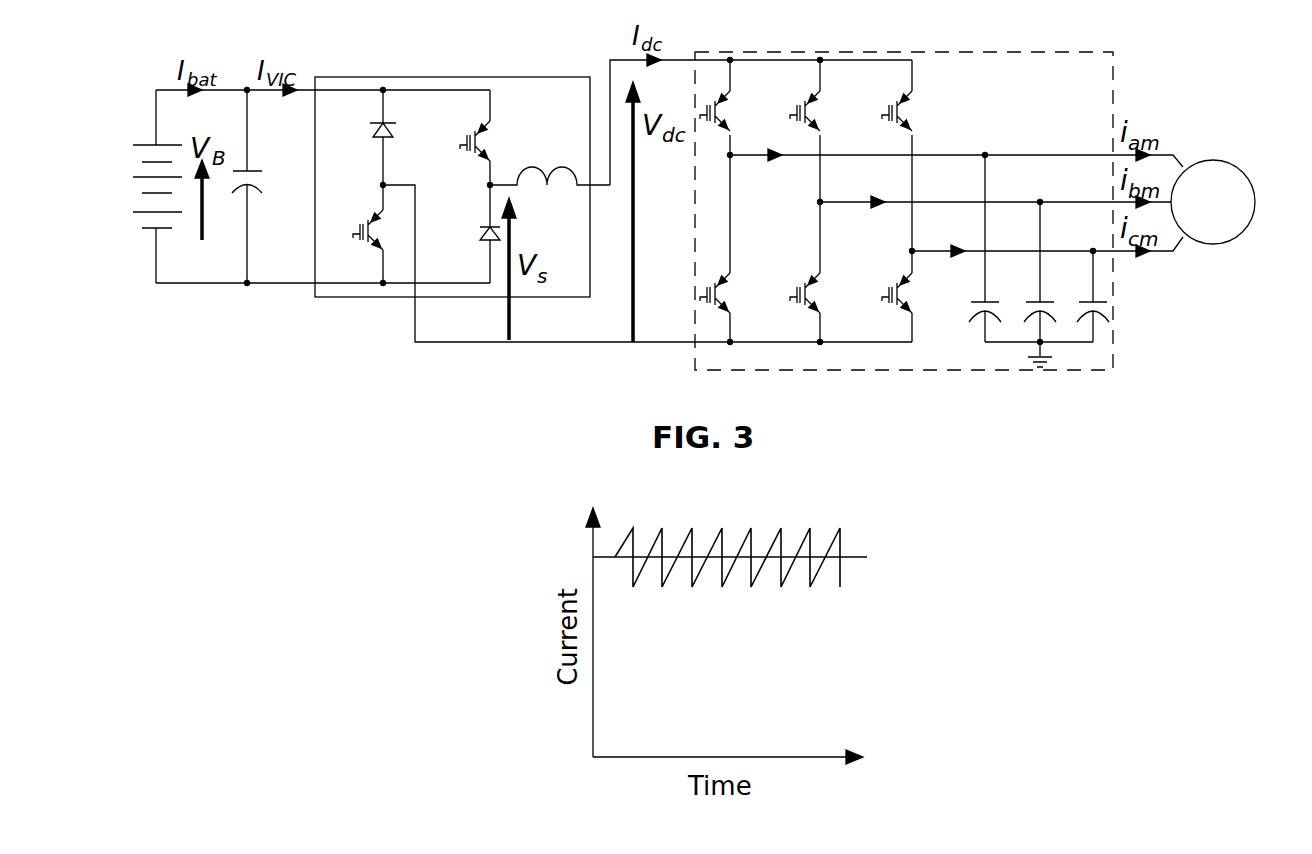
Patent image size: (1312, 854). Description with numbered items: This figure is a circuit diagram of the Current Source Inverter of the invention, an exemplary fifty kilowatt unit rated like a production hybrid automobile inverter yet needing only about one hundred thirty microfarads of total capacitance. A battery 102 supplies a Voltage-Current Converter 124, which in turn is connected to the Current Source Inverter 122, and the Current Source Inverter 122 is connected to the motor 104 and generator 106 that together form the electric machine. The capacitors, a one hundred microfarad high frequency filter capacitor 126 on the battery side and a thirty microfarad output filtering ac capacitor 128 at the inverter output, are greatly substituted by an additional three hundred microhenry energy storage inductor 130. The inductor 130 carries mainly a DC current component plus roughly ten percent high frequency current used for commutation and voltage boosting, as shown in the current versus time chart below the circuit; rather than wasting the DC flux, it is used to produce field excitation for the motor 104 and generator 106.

The battery 102 is at (140, 213).
The high frequency filter capacitor 126 is at (230, 193).
The Voltage-Current Converter 124 is at (463, 207).
The energy storage inductor 130 is at (577, 197).
The Current Source Inverter 122 is at (951, 187).
The output filtering ac capacitor 128 is at (1105, 320).
The motor 104 is at (1237, 148).
The generator 106 is at (1208, 160).